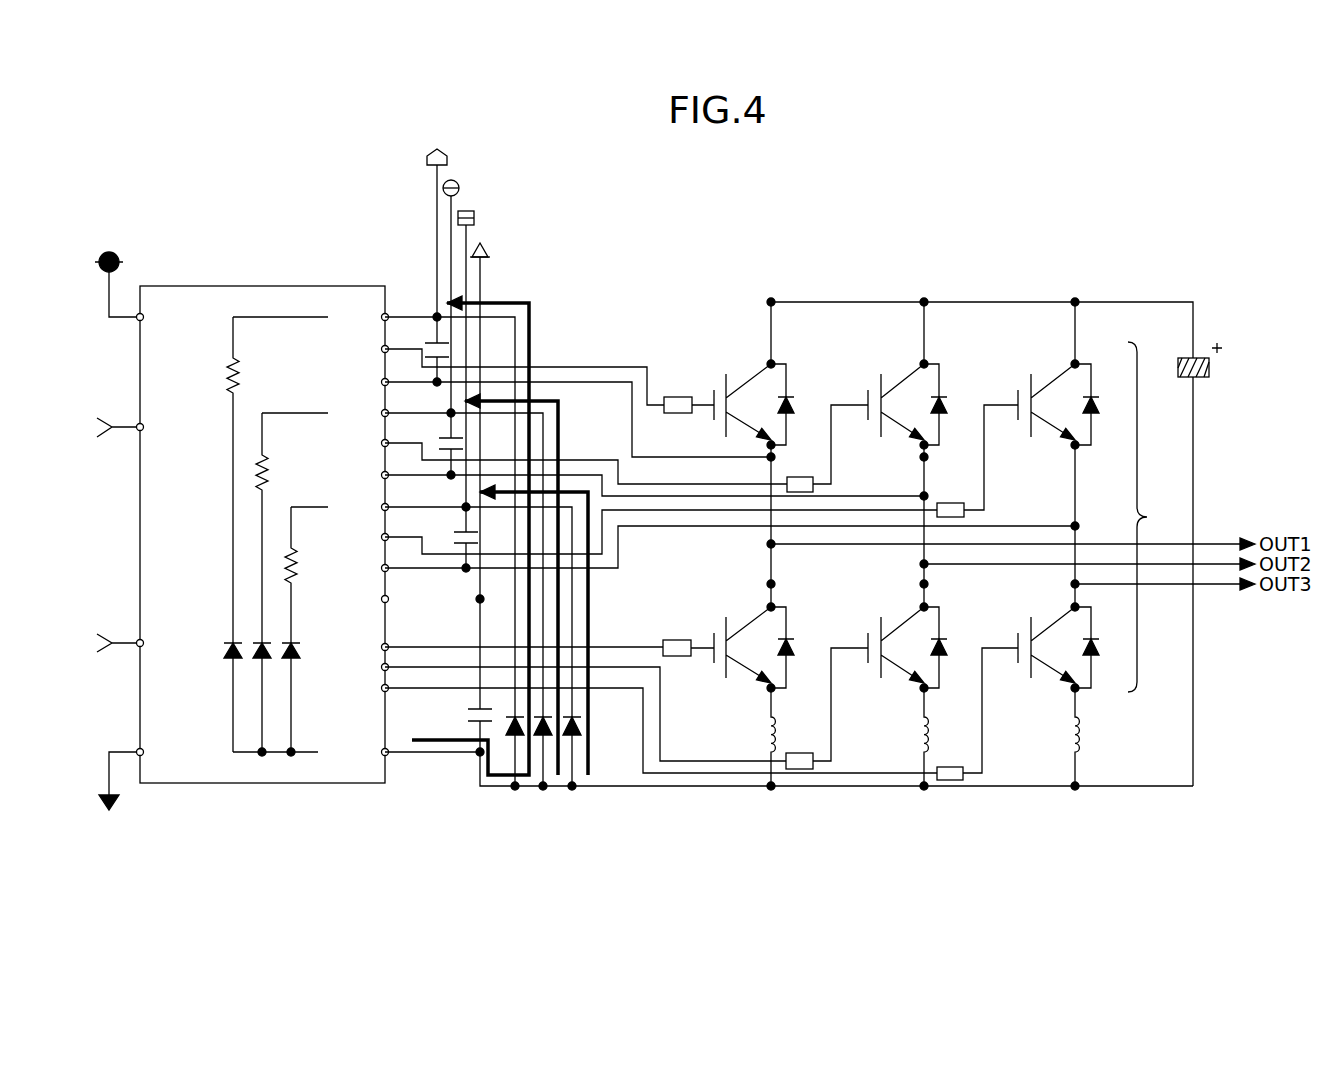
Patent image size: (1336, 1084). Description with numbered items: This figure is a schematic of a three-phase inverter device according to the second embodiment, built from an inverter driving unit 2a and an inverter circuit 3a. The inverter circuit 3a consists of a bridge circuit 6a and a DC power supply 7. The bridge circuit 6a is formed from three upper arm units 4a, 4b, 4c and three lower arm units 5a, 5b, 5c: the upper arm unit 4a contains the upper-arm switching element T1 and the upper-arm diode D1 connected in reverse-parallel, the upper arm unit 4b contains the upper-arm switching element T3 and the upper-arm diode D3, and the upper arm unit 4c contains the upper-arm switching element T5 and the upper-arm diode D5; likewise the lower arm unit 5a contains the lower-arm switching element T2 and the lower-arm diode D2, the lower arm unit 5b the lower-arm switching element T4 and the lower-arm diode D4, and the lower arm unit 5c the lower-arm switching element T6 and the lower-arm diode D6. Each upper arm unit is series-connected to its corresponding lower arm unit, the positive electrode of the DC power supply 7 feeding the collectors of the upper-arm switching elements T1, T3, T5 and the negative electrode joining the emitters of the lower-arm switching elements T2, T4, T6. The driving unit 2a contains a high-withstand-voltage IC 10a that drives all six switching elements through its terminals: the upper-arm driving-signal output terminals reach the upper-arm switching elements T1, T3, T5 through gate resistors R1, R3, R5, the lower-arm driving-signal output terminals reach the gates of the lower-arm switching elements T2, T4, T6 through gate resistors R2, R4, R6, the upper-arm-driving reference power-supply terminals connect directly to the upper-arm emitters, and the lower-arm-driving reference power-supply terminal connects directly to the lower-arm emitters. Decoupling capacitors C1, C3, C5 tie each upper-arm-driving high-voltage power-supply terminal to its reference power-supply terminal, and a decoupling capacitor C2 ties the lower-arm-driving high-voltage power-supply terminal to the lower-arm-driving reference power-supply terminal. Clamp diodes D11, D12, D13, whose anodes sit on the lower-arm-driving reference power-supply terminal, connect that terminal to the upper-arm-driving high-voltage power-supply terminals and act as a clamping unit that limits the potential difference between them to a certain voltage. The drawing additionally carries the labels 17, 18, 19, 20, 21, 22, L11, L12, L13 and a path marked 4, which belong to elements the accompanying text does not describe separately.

The inverter driving unit 2a is at (266, 250).
The inverter circuit 3a is at (964, 252).
The upper arm unit 4a is at (746, 338).
The upper arm unit 4b is at (900, 338).
The upper arm unit 4c is at (1052, 338).
The lower arm unit 5a is at (718, 718).
The lower arm unit 5b is at (867, 720).
The lower arm unit 5c is at (1022, 720).
The bridge circuit 6a is at (1147, 517).
The DC power supply 7 is at (1212, 366).
The high-withstand-voltage IC 10a is at (282, 784).
The bootstrap diode 17 is at (226, 658).
The bootstrap diode 18 is at (260, 659).
The bootstrap diode 19 is at (295, 660).
The bootstrap resistor 20 is at (228, 375).
The bootstrap resistor 21 is at (256, 468).
The bootstrap resistor 22 is at (288, 558).
The through current path 4 is at (518, 592).
The decoupling capacitor C1 is at (430, 340).
The decoupling capacitor C3 is at (450, 436).
The decoupling capacitor C5 is at (466, 532).
The decoupling capacitor C2 is at (470, 708).
The clamp diode D11 is at (510, 738).
The clamp diode D12 is at (544, 741).
The clamp diode D13 is at (580, 745).
The upper-arm switching element T1 is at (714, 386).
The lower-arm switching element T2 is at (714, 629).
The upper-arm switching element T3 is at (870, 386).
The lower-arm switching element T4 is at (870, 627).
The upper-arm switching element T5 is at (1020, 386).
The lower-arm switching element T6 is at (1020, 627).
The upper-arm diode D1 is at (788, 394).
The lower-arm diode D2 is at (788, 636).
The upper-arm diode D3 is at (941, 394).
The lower-arm diode D4 is at (941, 636).
The upper-arm diode D5 is at (1092, 394).
The lower-arm diode D6 is at (1092, 636).
The gate resistor R1 is at (678, 397).
The gate resistor R2 is at (676, 640).
The gate resistor R3 is at (802, 477).
The gate resistor R4 is at (802, 751).
The gate resistor R5 is at (954, 503).
The gate resistor R6 is at (954, 766).
The inductance L11 is at (768, 734).
The inductance L12 is at (922, 734).
The inductance L13 is at (1074, 734).